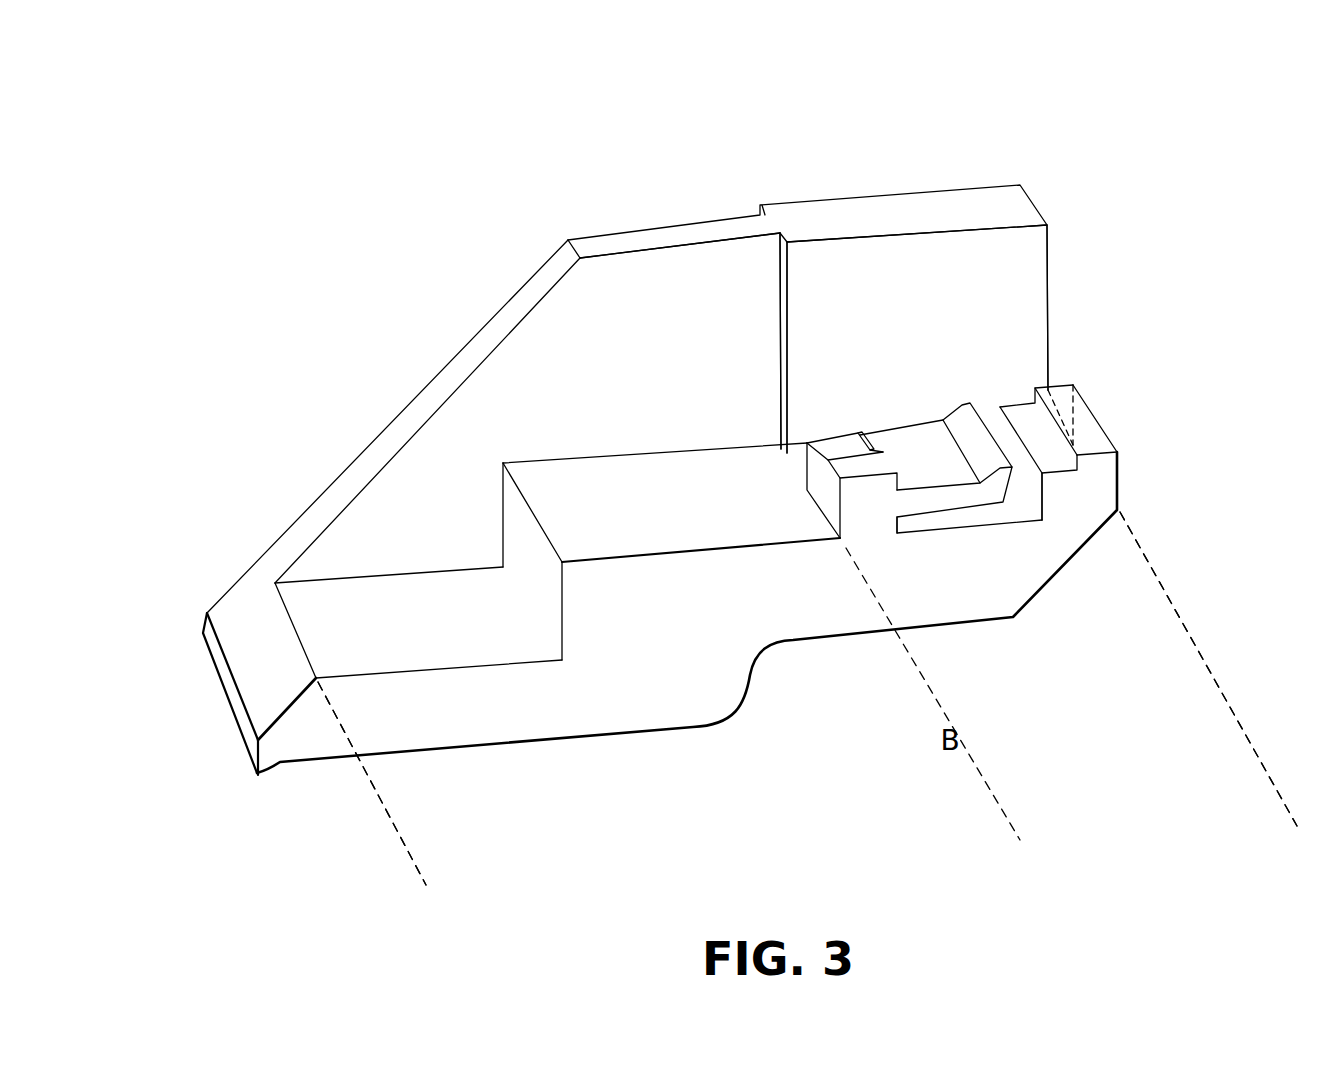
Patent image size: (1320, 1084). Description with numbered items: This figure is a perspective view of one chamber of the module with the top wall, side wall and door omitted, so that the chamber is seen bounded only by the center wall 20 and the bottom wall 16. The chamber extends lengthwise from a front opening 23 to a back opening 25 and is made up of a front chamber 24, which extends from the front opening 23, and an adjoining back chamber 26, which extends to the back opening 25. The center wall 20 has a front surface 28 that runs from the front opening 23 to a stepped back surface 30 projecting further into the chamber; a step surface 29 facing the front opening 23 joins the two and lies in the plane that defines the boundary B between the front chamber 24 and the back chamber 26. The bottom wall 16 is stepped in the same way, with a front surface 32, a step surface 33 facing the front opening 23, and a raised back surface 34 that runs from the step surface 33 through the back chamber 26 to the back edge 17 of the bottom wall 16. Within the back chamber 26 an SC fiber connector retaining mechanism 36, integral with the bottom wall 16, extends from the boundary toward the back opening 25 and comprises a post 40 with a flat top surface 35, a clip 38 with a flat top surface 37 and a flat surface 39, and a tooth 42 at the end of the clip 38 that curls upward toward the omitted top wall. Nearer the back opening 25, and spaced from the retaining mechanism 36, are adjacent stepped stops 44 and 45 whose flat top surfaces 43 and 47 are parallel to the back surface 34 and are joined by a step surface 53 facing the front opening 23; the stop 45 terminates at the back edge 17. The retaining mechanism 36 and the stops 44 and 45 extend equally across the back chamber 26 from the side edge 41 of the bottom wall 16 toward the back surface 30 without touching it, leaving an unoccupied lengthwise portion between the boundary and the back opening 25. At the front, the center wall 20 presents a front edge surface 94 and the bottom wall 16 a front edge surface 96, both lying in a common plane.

The bottom wall 16 is at (693, 703).
The back edge 17 is at (1075, 385).
The center wall 20 is at (590, 219).
The front opening 23 is at (305, 556).
The front chamber 24 is at (435, 884).
The back opening 25 is at (1133, 282).
The back chamber 26 is at (1282, 826).
The front surface 28 is at (588, 379).
The step surface 29 is at (781, 258).
The back surface 30 is at (943, 289).
The front surface 32 is at (418, 630).
The step surface 33 is at (522, 555).
The back surface 34 is at (633, 511).
The top surface 35 is at (859, 460).
The SC fiber connector retaining mechanism 36 is at (793, 512).
The top surface 37 is at (827, 449).
The clip 38 is at (931, 510).
The flat surface 39 is at (923, 440).
The post 40 is at (805, 466).
The side edge 41 is at (726, 566).
The tooth 42 is at (980, 420).
The top surface 43 is at (1042, 438).
The stop 44 is at (1059, 510).
The stop 45 is at (1098, 473).
The top surface 47 is at (1092, 443).
The step surface 53 is at (1065, 447).
The front edge surface 94 is at (397, 401).
The front edge surface 96 is at (232, 694).